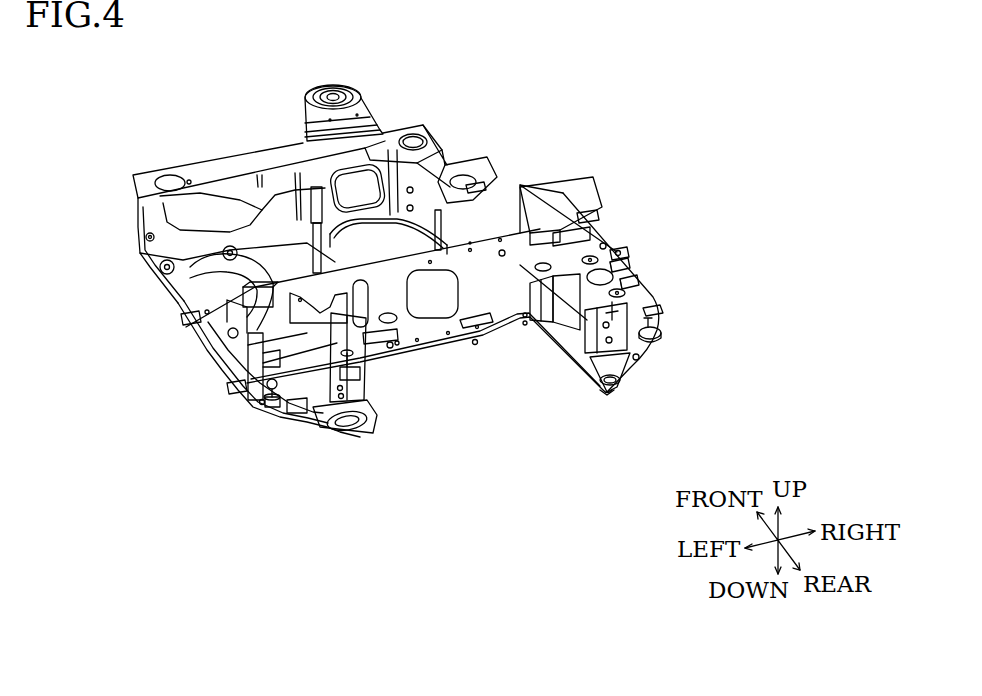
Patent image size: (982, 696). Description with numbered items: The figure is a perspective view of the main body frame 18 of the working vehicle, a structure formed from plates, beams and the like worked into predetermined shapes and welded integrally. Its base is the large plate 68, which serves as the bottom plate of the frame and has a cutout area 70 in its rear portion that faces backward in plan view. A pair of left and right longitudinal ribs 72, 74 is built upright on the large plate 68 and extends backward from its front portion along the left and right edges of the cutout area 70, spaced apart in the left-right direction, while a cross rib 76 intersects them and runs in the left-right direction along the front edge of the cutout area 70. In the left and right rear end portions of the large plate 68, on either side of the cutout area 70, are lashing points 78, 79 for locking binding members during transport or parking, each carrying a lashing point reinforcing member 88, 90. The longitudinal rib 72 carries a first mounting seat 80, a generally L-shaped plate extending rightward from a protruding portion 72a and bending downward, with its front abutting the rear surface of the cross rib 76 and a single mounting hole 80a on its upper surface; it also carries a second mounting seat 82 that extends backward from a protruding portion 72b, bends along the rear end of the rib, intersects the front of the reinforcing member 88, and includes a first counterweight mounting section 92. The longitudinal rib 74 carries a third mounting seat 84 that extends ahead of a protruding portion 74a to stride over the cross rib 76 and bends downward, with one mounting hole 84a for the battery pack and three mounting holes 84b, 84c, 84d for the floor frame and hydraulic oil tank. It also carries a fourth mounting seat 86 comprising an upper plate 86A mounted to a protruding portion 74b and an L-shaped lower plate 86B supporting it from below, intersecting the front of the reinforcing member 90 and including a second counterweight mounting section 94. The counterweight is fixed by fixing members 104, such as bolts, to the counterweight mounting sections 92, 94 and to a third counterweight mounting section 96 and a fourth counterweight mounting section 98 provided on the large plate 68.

The main body frame 18 is at (652, 125).
The large plate 68 is at (603, 243).
The cutout area 70 is at (463, 373).
The longitudinal rib 72 is at (240, 393).
The protruding portion 72a is at (215, 340).
The protruding portion 72b is at (228, 387).
The longitudinal rib 74 is at (577, 342).
The protruding portion 74a is at (622, 253).
The protruding portion 74b is at (573, 327).
The cross rib 76 is at (240, 277).
The lashing point 78 is at (350, 443).
The lashing point 79 is at (612, 403).
The first mounting seat 80 is at (197, 323).
The mounting hole 80a is at (155, 240).
The second mounting seat 82 is at (352, 393).
The third mounting seat 84 is at (560, 208).
The mounting hole 84a is at (588, 217).
The mounting hole 84b is at (475, 185).
The mounting hole 84c is at (502, 250).
The mounting hole 84d is at (519, 250).
The fourth mounting seat 86 is at (742, 246).
The upper plate 86A is at (620, 303).
The lower plate 86B is at (628, 268).
The lashing point reinforcing member 88 is at (340, 430).
The lashing point reinforcing member 90 is at (620, 408).
The first counterweight mounting section 92 is at (362, 378).
The second counterweight mounting section 94 is at (592, 380).
The third counterweight mounting section 96 is at (272, 407).
The fourth counterweight mounting section 98 is at (660, 334).
The fixing member 104 is at (656, 320).